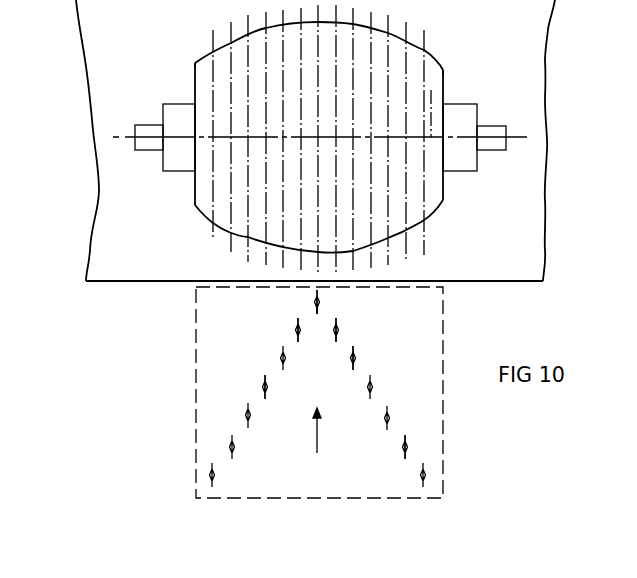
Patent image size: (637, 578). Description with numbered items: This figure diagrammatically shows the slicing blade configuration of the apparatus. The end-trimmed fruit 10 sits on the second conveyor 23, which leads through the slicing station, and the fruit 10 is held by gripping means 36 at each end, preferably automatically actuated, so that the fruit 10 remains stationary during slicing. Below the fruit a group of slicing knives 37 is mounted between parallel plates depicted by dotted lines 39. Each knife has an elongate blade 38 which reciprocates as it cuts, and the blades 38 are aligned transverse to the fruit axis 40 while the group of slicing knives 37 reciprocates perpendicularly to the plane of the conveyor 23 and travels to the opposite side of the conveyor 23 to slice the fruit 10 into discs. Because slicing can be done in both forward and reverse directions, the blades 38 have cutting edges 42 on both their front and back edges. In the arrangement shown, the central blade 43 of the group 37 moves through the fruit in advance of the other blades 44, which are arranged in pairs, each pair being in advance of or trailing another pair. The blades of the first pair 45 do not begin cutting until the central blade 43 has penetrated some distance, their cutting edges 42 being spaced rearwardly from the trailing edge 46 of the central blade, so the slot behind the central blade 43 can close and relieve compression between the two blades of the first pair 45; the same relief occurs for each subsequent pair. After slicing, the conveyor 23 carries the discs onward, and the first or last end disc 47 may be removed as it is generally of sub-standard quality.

The fruit 10 is at (414, 38).
The second conveyor 23 is at (482, 264).
The gripping means 36 is at (180, 160).
The group of slicing knives 37 is at (242, 370).
The elongate blade 38 is at (362, 357).
The parallel plates 39 is at (445, 454).
The fruit axis 40 is at (432, 92).
The cutting edges 42 is at (248, 427).
The central blade 43 is at (320, 300).
The other blades 44 is at (410, 447).
The first pair of blades 45 is at (292, 330).
The trailing edge of the central blade 46 is at (317, 307).
The end disc 47 is at (200, 78).